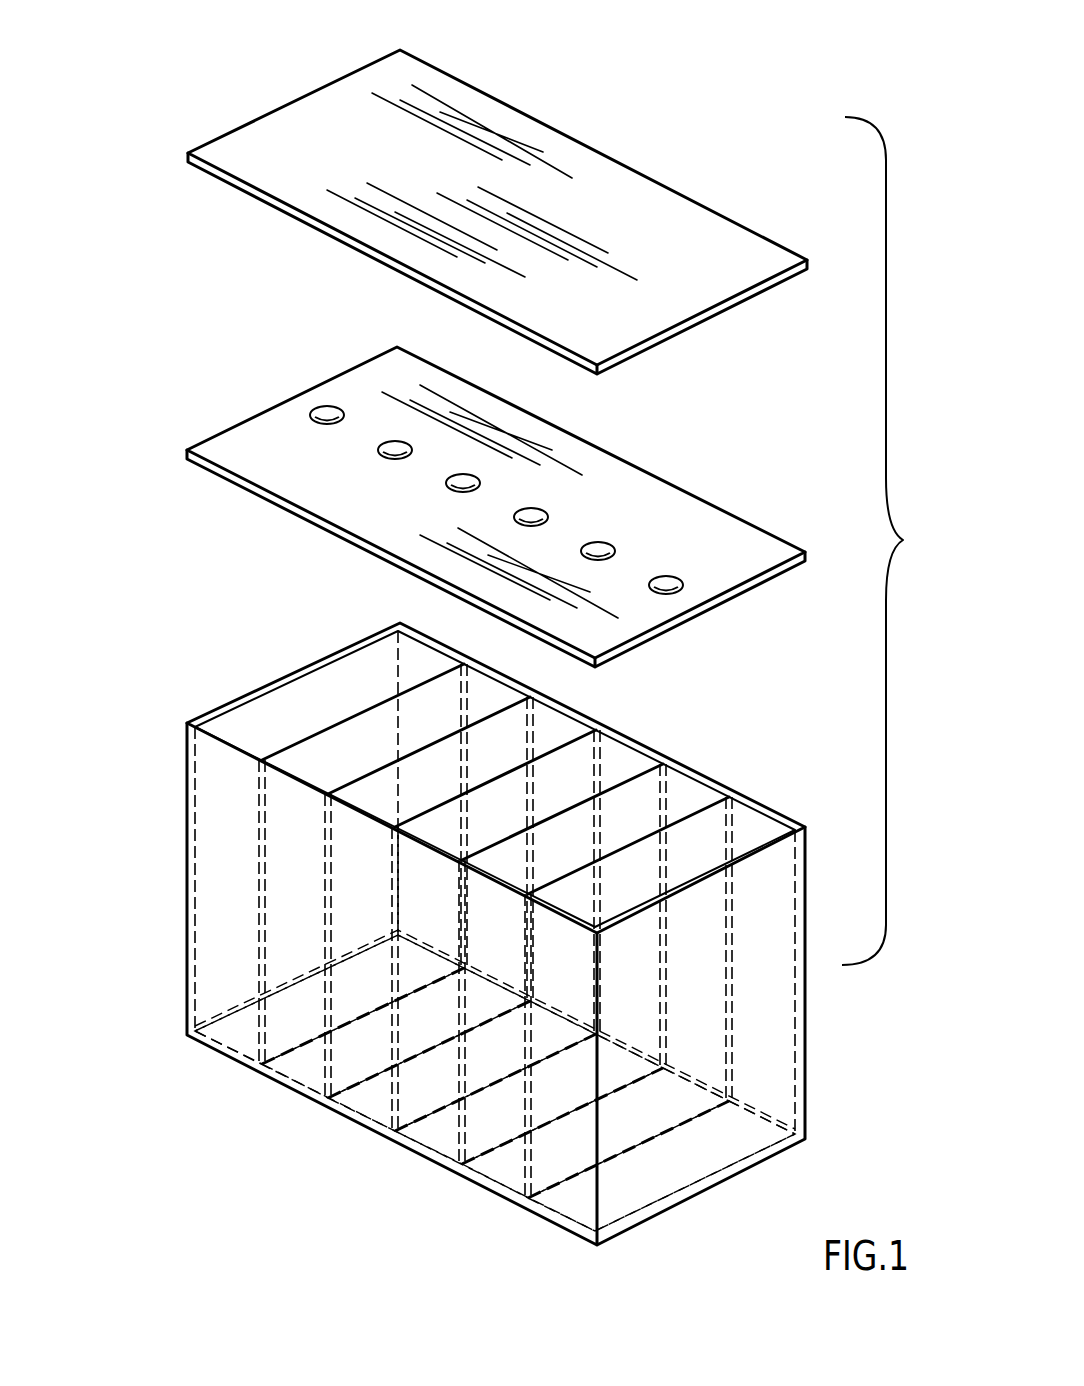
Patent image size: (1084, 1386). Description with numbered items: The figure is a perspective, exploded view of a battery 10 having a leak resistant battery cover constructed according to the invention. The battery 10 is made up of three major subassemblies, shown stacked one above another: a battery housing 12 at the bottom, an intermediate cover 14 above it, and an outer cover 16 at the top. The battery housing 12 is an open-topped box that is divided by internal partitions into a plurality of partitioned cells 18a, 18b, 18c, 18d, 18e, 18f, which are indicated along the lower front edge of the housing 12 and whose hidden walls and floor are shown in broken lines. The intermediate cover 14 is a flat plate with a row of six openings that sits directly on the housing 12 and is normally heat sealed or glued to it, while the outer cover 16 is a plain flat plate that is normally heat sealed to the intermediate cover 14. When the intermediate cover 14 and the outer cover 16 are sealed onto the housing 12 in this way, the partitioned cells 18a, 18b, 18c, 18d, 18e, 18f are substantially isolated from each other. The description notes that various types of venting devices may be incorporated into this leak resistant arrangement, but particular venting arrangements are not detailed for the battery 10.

The battery 10 is at (610, 122).
The battery housing 12 is at (185, 873).
The intermediate cover 14 is at (270, 403).
The outer cover 16 is at (297, 96).
The partitioned cell 18a is at (218, 1057).
The partitioned cell 18b is at (289, 1092).
The partitioned cell 18c is at (360, 1127).
The partitioned cell 18d is at (430, 1160).
The partitioned cell 18e is at (500, 1197).
The partitioned cell 18f is at (575, 1235).